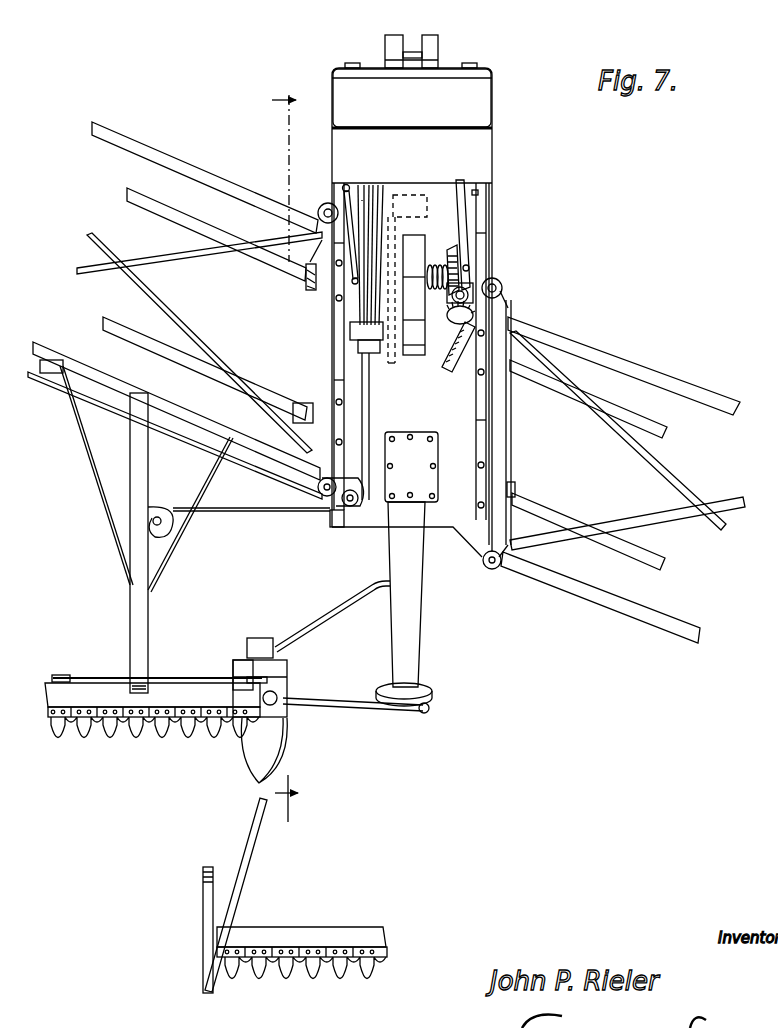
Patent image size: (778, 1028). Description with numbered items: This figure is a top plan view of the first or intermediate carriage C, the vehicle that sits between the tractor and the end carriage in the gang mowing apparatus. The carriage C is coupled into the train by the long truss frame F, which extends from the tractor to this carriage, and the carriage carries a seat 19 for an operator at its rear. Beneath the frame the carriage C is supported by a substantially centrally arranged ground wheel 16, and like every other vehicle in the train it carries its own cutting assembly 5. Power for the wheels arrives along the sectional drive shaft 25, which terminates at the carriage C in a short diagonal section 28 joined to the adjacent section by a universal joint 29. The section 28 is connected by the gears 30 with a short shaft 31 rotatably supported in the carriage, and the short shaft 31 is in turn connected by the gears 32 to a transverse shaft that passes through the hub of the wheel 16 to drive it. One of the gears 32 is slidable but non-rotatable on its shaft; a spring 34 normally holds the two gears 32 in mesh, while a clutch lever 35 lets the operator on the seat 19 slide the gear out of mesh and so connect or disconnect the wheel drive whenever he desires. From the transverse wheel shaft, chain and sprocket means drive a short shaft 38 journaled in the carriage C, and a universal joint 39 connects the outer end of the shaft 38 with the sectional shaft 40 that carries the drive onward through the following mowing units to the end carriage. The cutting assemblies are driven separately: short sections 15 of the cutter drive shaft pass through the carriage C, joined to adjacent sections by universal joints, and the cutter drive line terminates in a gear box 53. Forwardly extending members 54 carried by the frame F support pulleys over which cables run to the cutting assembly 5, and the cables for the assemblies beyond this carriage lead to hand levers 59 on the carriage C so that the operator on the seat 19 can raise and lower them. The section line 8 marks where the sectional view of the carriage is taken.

The cutting assembly 5 is at (160, 747).
The section line 8- 8 is at (295, 457).
The short sections of shaft 26 15 is at (389, 212).
The ground wheel 16 is at (416, 194).
The seat 19 is at (488, 104).
The drive shaft 25 is at (563, 393).
The short diagonal section 28 is at (470, 358).
The universal joint 29 is at (513, 352).
The gears 30 is at (452, 325).
The short shaft 31 is at (484, 288).
The gears 32 is at (451, 248).
The spring 34 is at (433, 265).
The clutch lever 35 is at (464, 212).
The short shaft 38 is at (310, 297).
The universal joint 39 is at (305, 287).
The sectional shaft 40 is at (198, 223).
The gear box 53 is at (417, 437).
The forwardly extending members 54 is at (146, 650).
The hand levers 59 is at (348, 185).
The intermediate carriage C is at (500, 171).
The truss frame F is at (163, 138).